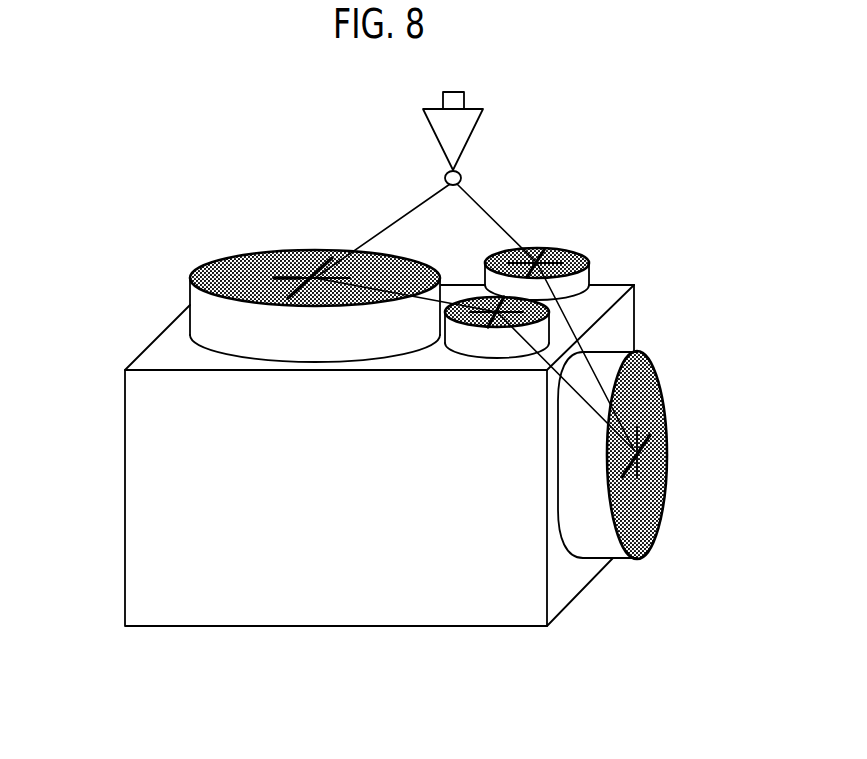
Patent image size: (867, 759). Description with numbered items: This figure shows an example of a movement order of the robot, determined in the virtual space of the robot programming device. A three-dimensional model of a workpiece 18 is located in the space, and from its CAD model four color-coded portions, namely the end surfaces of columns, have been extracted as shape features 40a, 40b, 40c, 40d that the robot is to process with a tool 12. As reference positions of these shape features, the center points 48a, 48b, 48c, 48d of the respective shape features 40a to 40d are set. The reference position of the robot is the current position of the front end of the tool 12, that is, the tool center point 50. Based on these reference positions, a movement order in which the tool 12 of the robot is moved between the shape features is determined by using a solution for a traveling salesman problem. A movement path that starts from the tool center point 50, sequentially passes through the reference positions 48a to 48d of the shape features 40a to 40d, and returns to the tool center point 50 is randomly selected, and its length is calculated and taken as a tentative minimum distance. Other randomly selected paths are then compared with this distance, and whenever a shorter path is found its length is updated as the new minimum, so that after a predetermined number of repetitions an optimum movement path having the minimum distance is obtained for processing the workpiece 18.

The tool 12 is at (465, 125).
The workpiece 18 is at (104, 394).
The shape feature 40a is at (233, 253).
The shape feature 40b is at (580, 248).
The shape feature 40c is at (548, 331).
The shape feature 40d is at (663, 512).
The center point 48a is at (305, 277).
The center point 48b is at (540, 252).
The center point 48c is at (545, 302).
The center point 48d is at (665, 458).
The tool center point 50 is at (445, 172).